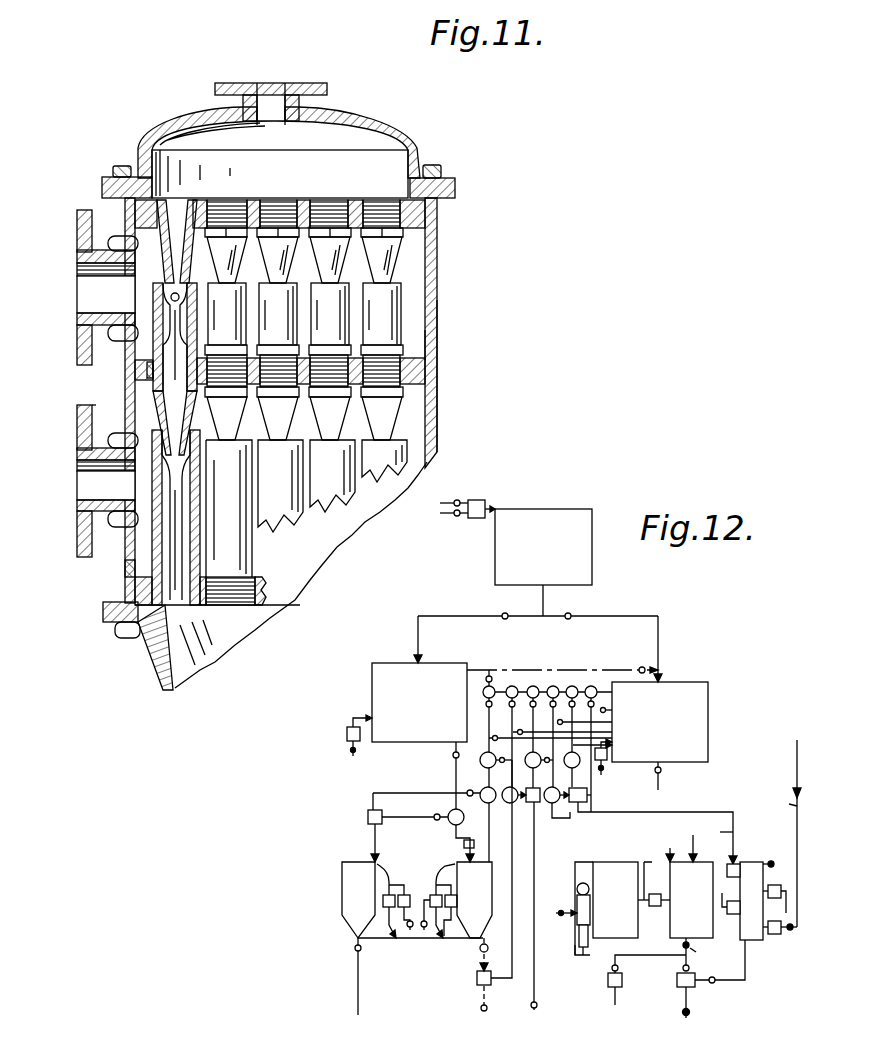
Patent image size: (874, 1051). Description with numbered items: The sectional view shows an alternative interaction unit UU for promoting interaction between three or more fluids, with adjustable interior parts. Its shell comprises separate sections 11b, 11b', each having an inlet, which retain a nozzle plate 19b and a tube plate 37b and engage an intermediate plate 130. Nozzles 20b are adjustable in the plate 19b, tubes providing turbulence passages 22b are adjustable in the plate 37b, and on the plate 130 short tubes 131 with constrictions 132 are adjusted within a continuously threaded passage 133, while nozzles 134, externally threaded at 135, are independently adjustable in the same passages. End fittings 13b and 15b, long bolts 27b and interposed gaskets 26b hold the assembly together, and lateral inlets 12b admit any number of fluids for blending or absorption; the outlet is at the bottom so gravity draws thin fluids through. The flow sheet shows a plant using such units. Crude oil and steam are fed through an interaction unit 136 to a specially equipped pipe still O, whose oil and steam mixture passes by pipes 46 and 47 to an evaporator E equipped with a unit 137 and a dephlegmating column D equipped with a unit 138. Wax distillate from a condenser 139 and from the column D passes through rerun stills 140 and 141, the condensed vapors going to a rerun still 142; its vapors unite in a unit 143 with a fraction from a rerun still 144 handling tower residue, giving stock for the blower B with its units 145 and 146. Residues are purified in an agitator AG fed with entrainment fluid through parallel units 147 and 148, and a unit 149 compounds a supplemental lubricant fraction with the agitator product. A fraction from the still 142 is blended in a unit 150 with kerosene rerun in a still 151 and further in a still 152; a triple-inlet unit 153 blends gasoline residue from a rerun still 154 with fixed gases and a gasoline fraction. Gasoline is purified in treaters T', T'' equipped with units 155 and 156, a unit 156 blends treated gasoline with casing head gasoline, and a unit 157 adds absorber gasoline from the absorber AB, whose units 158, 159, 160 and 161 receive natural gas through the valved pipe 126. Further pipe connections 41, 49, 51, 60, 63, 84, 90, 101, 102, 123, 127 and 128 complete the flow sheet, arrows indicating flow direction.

In FIG. 11, the end fitting 13b is at (377, 132).
In FIG. 11, the nozzle plate 19b is at (262, 200).
In FIG. 11, the bolt 27b is at (440, 165).
In FIG. 11, the gasket 26b is at (440, 217).
In FIG. 11, the nozzle 20b is at (393, 262).
In FIG. 11, the shell section 11b is at (306, 400).
In FIG. 11, the shell section 11b' is at (461, 376).
In FIG. 11, the interaction unit UU is at (436, 342).
In FIG. 11, the continuously threaded passage 133 is at (255, 350).
In FIG. 11, the external thread 135 is at (233, 392).
In FIG. 11, the short tube 131 is at (176, 328).
In FIG. 11, the constriction 132 is at (172, 299).
In FIG. 11, the intermediate plate 130 is at (140, 383).
In FIG. 11, the turbulence passage 22b is at (180, 556).
In FIG. 11, the lateral inlet 12b is at (100, 292).
In FIG. 11, the nozzle 134 is at (160, 413).
In FIG. 11, the end fitting 15b is at (110, 618).
In FIG. 11, the tube plate 37b is at (125, 590).
In FIG. 12, the pipe still O is at (592, 568).
In FIG. 12, the interaction unit 136 is at (487, 505).
In FIG. 12, the rerun still 142 is at (450, 505).
In FIG. 12, the pipe still outlet line 41 is at (543, 616).
In FIG. 12, the pipe 47 is at (560, 619).
In FIG. 12, the pipe 46 is at (420, 661).
In FIG. 12, the evaporator E is at (383, 663).
In FIG. 12, the vapor line 49 is at (484, 668).
In FIG. 12, the line to dephlegmating column 60 is at (660, 678).
In FIG. 12, the dephlegmating column D is at (695, 682).
In FIG. 12, the column bottom outlet 63 is at (671, 776).
In FIG. 12, the interaction unit 138 is at (608, 757).
In FIG. 12, the condenser 139 is at (539, 766).
In FIG. 12, the interaction unit 137 is at (356, 734).
In FIG. 12, the tower bottom line 51 is at (453, 750).
In FIG. 12, the rerun still 140 is at (482, 757).
In FIG. 12, the rerun still 141 is at (484, 788).
In FIG. 12, the still 151 is at (539, 754).
In FIG. 12, the rerun still 154 is at (571, 763).
In FIG. 12, the interaction unit 150 is at (533, 803).
In FIG. 12, the rerun still 152 is at (552, 806).
In FIG. 12, the triple-inlet unit 153 is at (582, 805).
In FIG. 12, the interaction unit 143 is at (368, 818).
In FIG. 12, the rerun still 144 is at (451, 811).
In FIG. 12, the agitator AG is at (468, 839).
In FIG. 12, the blower B is at (355, 862).
In FIG. 12, the interaction unit 145 is at (389, 893).
In FIG. 12, the interaction unit 146 is at (406, 893).
In FIG. 12, the interaction unit 147 is at (432, 893).
In FIG. 12, the interaction unit 148 is at (452, 893).
In FIG. 12, the interaction unit 149 is at (477, 980).
In FIG. 12, the interaction unit 155 is at (567, 908).
In FIG. 12, the line 84 is at (573, 950).
In FIG. 12, the treater T' is at (615, 889).
In FIG. 12, the valve 90 is at (644, 861).
In FIG. 12, the interaction unit 156 is at (609, 987).
In FIG. 12, the soda water line 101 is at (694, 852).
In FIG. 12, the line 123 is at (733, 835).
In FIG. 12, the treater outlet 102 is at (683, 945).
In FIG. 12, the treater T'' is at (701, 952).
In FIG. 12, the interaction unit 157 is at (693, 986).
In FIG. 12, the absorber gas line 128 is at (745, 963).
In FIG. 12, the absorber AB is at (751, 889).
In FIG. 12, the interaction unit 161 is at (729, 866).
In FIG. 12, the interaction unit 159 is at (722, 907).
In FIG. 12, the interaction unit 160 is at (780, 882).
In FIG. 12, the interaction unit 158 is at (781, 920).
In FIG. 12, the gas outlet 127 is at (775, 863).
In FIG. 12, the valved pipe 126 is at (797, 917).